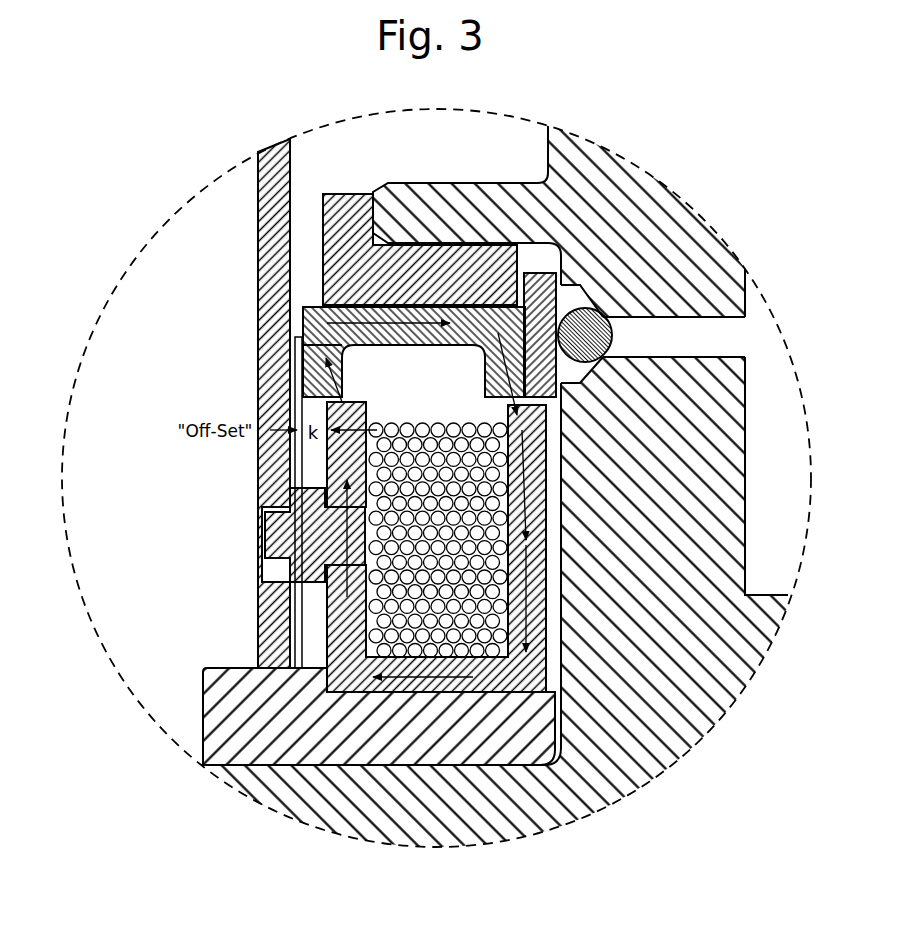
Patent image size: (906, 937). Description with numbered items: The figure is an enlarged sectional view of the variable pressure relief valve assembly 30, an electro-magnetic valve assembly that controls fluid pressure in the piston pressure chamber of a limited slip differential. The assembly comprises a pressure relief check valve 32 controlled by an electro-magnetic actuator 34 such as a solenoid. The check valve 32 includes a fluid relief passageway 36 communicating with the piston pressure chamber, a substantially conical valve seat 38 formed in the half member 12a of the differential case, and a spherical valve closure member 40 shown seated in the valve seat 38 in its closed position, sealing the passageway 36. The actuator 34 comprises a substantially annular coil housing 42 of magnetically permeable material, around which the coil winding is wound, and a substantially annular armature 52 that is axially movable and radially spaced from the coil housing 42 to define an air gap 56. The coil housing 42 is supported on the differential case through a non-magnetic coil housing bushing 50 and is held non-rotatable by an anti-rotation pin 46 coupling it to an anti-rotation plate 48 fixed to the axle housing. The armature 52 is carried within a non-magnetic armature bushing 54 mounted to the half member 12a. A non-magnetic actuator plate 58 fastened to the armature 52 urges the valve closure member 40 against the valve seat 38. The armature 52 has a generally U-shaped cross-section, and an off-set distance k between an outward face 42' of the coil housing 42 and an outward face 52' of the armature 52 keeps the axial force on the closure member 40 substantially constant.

The half member of the differential case 12a is at (322, 812).
The variable pressure relief valve assembly 30 is at (87, 620).
The pressure relief check valve 32 is at (575, 285).
The electro-magnetic actuator 34 is at (551, 657).
The fluid relief passageway 36 is at (727, 338).
The valve seat 38 is at (590, 300).
The valve closure member 40 is at (593, 337).
The coil housing 42 is at (577, 525).
The outward face of the coil housing 42' is at (378, 547).
The anti-rotation pin 46 is at (278, 535).
The anti-rotation plate 48 is at (263, 227).
The coil housing bushing 50 is at (220, 733).
The armature 52 is at (370, 351).
The outward face of the armature 52' is at (281, 371).
The armature bushing 54 is at (337, 200).
The air gap 56 is at (300, 401).
The actuator plate 58 is at (533, 275).